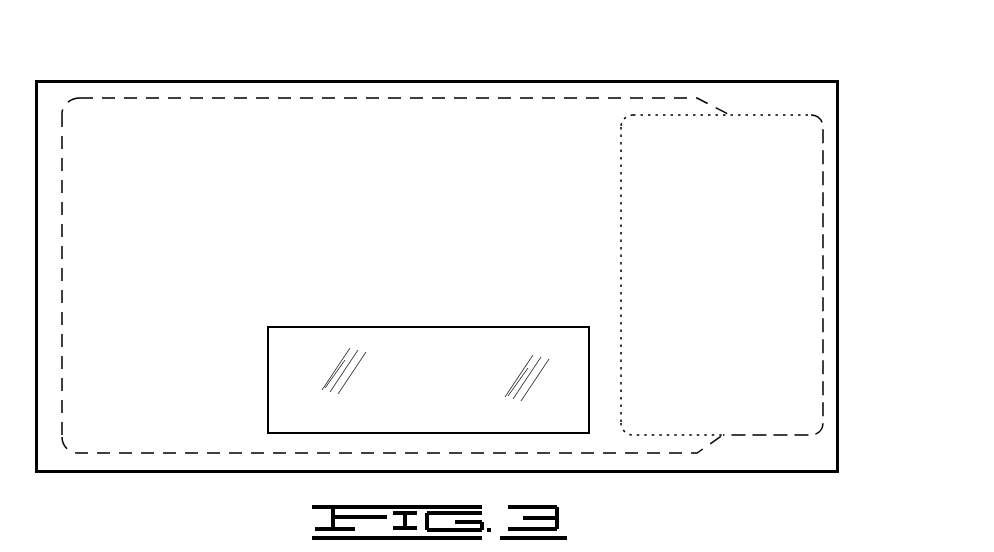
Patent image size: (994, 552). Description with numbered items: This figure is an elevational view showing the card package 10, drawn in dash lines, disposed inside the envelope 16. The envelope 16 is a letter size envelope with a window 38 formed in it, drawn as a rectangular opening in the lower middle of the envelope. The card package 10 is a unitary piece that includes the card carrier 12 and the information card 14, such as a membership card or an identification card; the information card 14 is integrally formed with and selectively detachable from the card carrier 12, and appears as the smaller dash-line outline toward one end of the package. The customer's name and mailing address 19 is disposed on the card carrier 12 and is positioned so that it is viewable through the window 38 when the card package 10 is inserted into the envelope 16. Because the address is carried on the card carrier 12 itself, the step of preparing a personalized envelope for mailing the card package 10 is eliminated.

The card package 10 is at (548, 123).
The card carrier 12 is at (226, 130).
The information card 14 is at (792, 160).
The envelope 16 is at (163, 471).
The customer's name and mailing address 19 is at (312, 360).
The window 38 is at (582, 435).